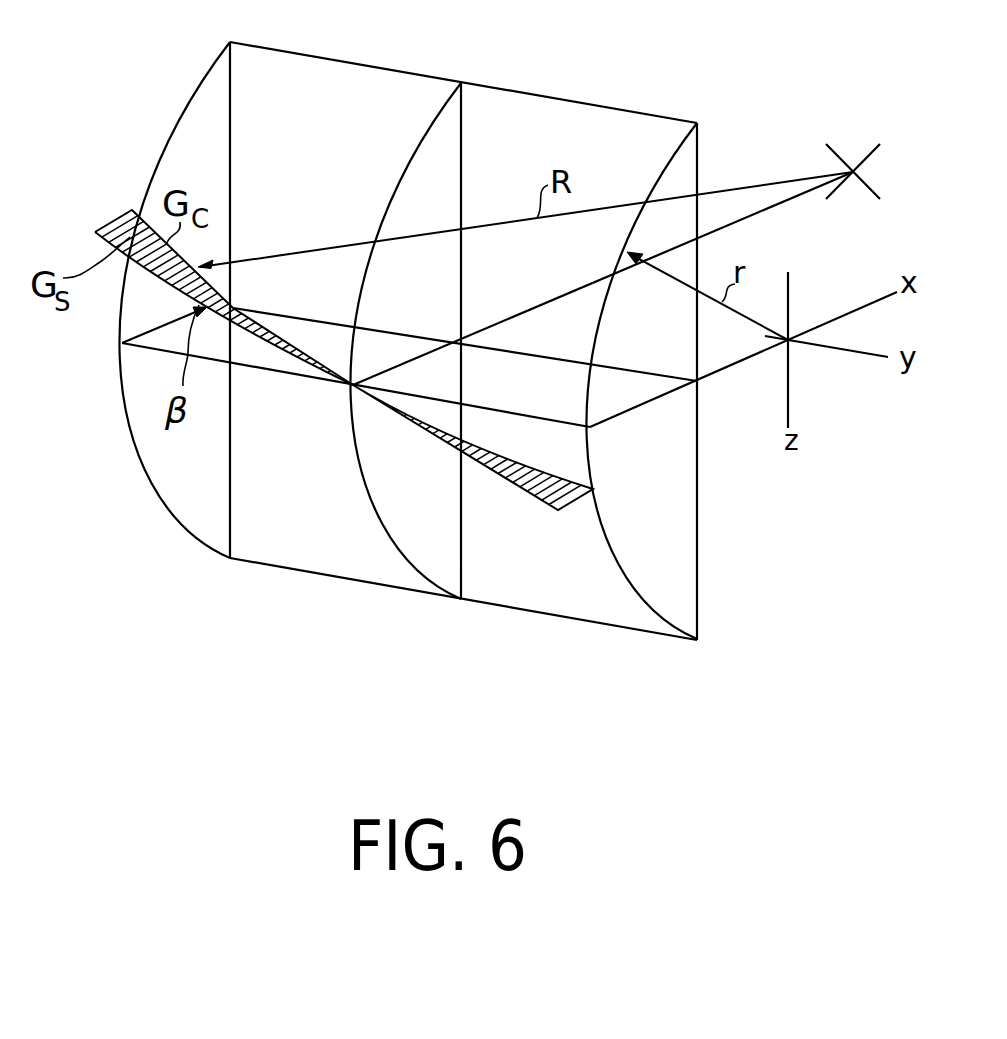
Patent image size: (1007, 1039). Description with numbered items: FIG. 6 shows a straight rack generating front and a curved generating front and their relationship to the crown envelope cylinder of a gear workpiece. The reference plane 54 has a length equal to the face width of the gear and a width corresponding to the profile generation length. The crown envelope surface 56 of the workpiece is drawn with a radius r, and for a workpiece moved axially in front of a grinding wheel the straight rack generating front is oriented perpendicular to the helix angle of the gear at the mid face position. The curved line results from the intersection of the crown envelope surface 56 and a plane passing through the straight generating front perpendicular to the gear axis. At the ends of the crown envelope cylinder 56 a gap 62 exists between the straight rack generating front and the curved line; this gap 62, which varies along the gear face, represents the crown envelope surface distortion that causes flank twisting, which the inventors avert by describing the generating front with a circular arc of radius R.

The reference plane 54 is at (349, 550).
The crown envelope surface 56 is at (148, 476).
The gap 62 is at (118, 222).